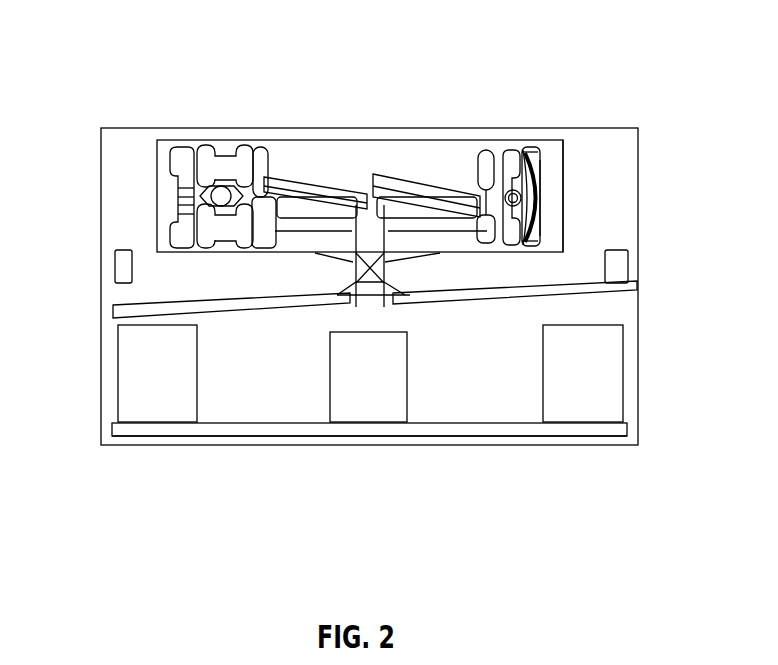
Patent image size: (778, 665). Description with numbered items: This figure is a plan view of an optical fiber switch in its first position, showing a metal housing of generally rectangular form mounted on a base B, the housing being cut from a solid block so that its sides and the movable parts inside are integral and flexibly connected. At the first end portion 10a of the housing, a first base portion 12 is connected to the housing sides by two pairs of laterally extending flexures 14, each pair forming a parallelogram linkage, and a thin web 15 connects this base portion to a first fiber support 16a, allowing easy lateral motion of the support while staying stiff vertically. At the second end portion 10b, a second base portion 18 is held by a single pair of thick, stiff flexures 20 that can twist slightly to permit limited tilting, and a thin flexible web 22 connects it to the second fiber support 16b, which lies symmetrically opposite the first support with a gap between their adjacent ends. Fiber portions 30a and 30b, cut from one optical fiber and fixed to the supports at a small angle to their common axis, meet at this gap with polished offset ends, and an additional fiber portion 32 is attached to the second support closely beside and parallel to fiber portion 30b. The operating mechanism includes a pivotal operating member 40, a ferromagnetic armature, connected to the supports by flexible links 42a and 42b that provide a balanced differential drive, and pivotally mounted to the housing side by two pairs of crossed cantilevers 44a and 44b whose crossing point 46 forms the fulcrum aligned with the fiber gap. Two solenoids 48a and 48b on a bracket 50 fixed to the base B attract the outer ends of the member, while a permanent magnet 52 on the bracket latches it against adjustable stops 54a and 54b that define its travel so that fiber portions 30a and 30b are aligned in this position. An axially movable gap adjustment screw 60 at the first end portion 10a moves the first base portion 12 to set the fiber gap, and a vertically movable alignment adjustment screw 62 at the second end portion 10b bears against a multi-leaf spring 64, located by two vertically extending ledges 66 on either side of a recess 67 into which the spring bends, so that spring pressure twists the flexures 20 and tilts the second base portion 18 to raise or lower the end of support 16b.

The base B is at (369, 323).
The first end portion of the housing 10a is at (295, 189).
The second end portion of the housing 10b is at (647, 196).
The first base portion 12 is at (200, 147).
The flexures 14 is at (276, 152).
The web 15 is at (247, 167).
The first fiber support 16a is at (287, 138).
The second fiber support 16b is at (421, 149).
The second base portion 18 is at (529, 139).
The flexures 20 is at (467, 126).
The flexible web 22 is at (457, 140).
The fiber portion 30a is at (305, 114).
The fiber portion 30b is at (407, 158).
The additional fiber portion 32 is at (415, 155).
The operating member 40 is at (275, 407).
The flexible link 42a is at (181, 279).
The flexible link 42b is at (553, 285).
The crossed cantilevers 44a is at (308, 362).
The crossed cantilevers 44b is at (541, 274).
The crossing point 46 is at (371, 400).
The solenoid 48a is at (105, 373).
The solenoid 48b is at (635, 380).
The bracket 50 is at (326, 471).
The permanent magnet 52 is at (369, 445).
The stop 54a is at (72, 266).
The stop 54b is at (666, 260).
The gap adjustment screw 60 is at (115, 145).
The alignment adjustment screw 62 is at (550, 107).
The leaf spring 64 is at (581, 159).
The ledges 66 is at (590, 151).
The recess 67 is at (631, 183).